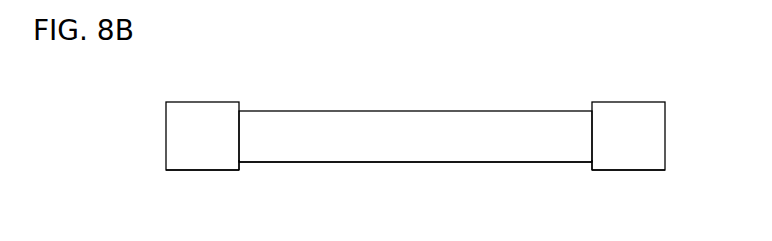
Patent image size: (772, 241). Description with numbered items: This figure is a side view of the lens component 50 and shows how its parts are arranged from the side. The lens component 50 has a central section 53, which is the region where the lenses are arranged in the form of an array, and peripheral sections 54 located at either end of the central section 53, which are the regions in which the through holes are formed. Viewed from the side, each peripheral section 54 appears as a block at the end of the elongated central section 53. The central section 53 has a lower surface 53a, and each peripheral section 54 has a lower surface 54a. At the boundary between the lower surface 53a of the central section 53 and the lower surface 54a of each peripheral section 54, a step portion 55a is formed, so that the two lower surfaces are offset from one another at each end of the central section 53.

The lens component 50 is at (690, 31).
The central section 53 is at (491, 119).
The lower surface of the central section 53a is at (420, 163).
The peripheral section 54 is at (202, 116).
The lower surface of the peripheral section 54a is at (203, 172).
The step portion 55a is at (245, 165).